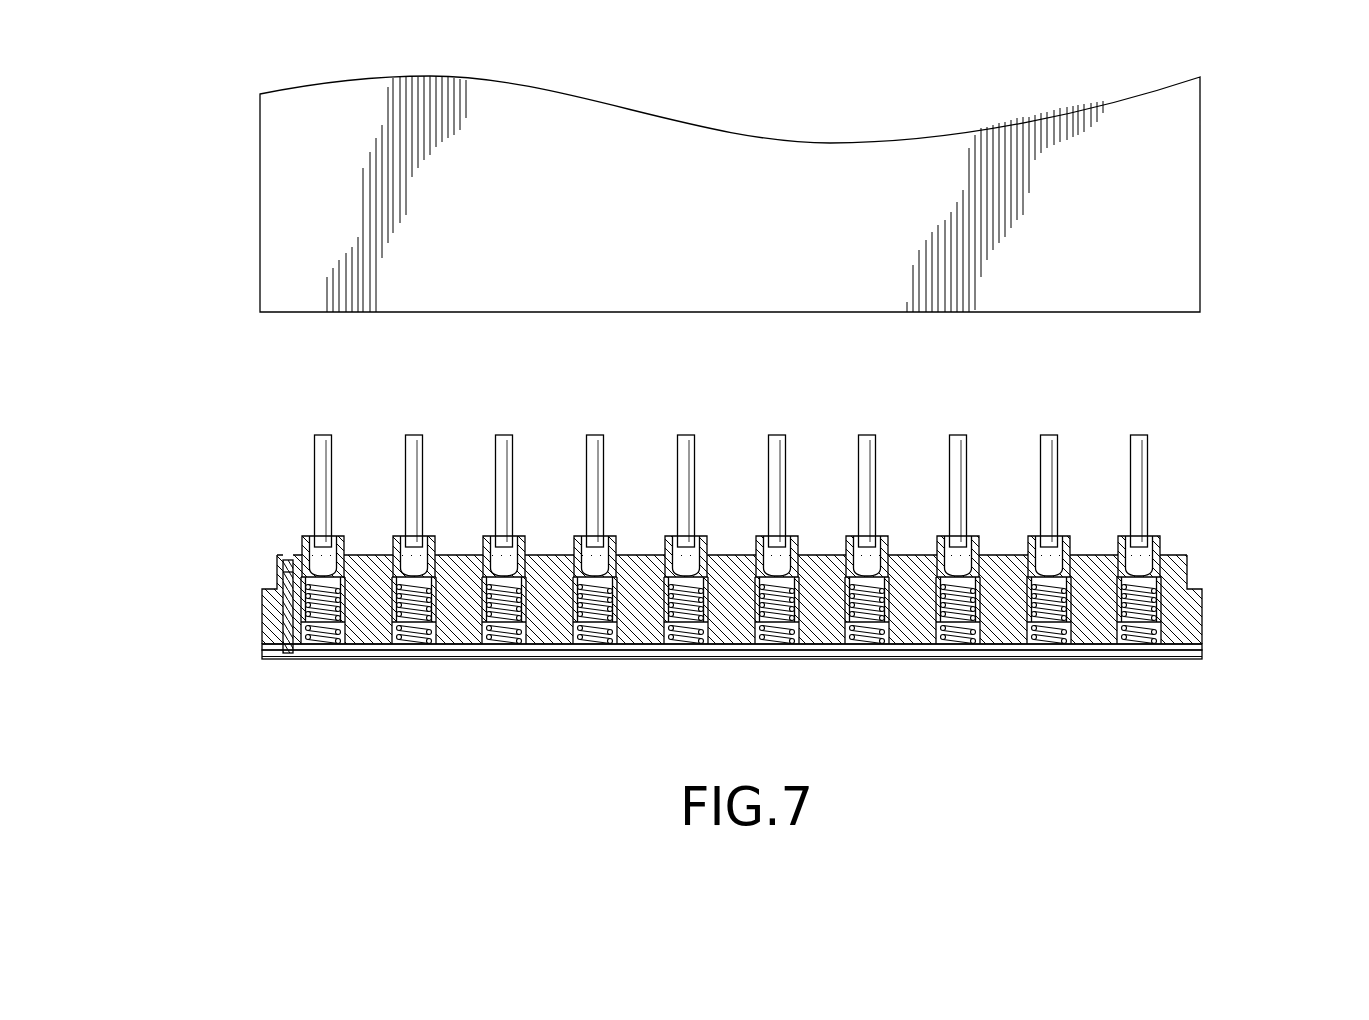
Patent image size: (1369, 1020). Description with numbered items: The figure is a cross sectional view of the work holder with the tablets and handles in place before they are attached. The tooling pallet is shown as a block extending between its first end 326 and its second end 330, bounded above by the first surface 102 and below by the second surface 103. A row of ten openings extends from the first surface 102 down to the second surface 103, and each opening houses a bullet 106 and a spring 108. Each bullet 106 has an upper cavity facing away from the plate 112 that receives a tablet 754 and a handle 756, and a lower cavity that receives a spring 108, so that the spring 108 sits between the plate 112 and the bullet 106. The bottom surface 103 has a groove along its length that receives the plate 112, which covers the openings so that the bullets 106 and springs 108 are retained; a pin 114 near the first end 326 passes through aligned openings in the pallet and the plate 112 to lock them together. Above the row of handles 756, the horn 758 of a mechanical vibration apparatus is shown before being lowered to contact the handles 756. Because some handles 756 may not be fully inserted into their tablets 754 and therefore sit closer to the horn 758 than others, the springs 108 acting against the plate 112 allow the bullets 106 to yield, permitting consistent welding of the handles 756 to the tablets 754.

The horn 758 is at (1053, 312).
The handles 756 is at (596, 435).
The tablets 754 is at (408, 557).
The pin 114 is at (290, 563).
The first end 326 is at (262, 617).
The first surface 102 is at (723, 560).
The second end 330 is at (1202, 612).
The second surface 103 is at (1182, 660).
The plate 112 is at (551, 650).
The spring 108 is at (684, 628).
The bullet 106 is at (797, 593).